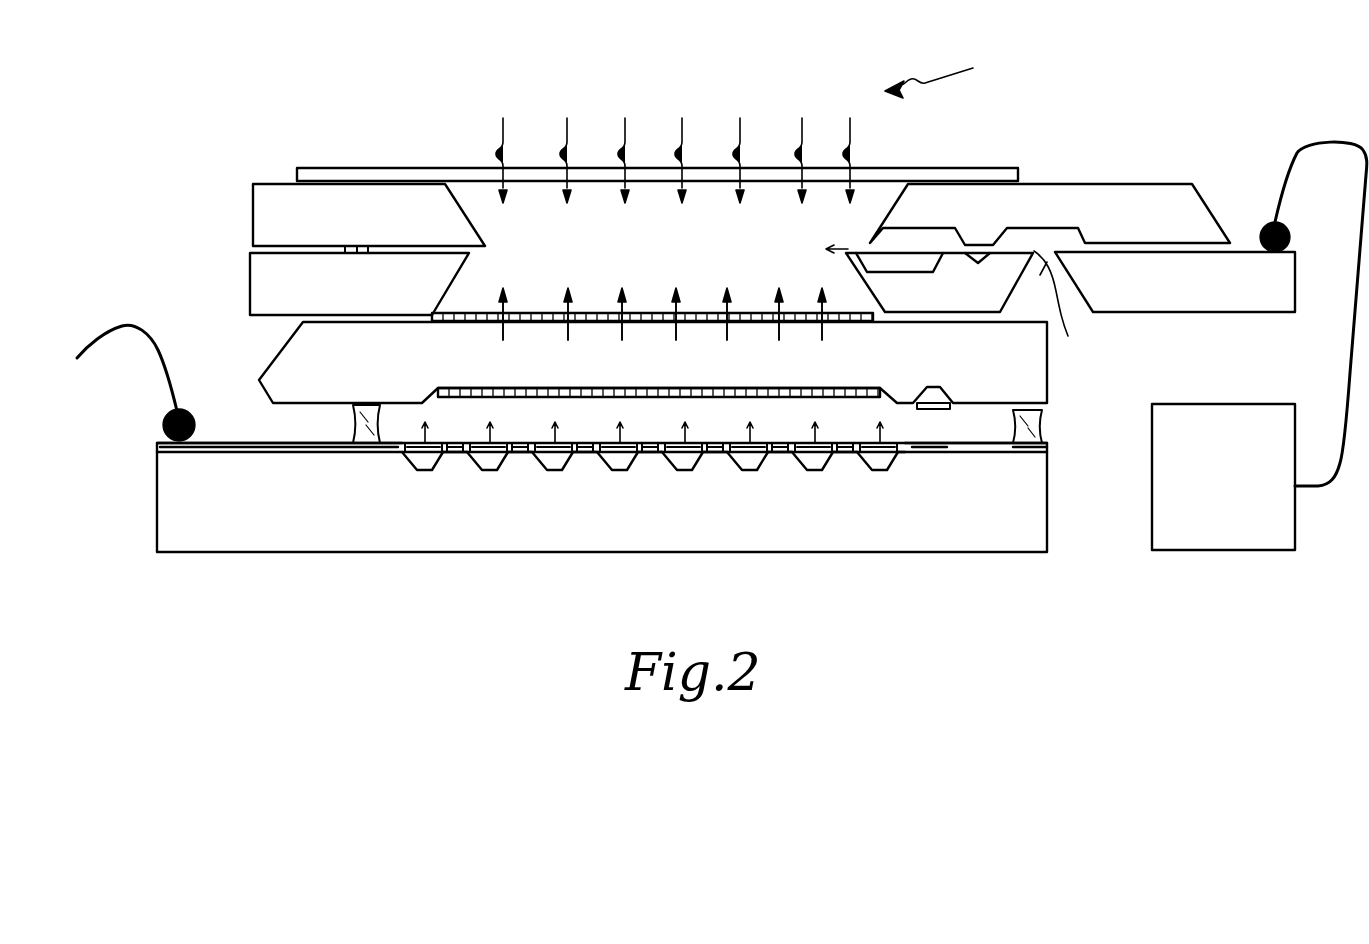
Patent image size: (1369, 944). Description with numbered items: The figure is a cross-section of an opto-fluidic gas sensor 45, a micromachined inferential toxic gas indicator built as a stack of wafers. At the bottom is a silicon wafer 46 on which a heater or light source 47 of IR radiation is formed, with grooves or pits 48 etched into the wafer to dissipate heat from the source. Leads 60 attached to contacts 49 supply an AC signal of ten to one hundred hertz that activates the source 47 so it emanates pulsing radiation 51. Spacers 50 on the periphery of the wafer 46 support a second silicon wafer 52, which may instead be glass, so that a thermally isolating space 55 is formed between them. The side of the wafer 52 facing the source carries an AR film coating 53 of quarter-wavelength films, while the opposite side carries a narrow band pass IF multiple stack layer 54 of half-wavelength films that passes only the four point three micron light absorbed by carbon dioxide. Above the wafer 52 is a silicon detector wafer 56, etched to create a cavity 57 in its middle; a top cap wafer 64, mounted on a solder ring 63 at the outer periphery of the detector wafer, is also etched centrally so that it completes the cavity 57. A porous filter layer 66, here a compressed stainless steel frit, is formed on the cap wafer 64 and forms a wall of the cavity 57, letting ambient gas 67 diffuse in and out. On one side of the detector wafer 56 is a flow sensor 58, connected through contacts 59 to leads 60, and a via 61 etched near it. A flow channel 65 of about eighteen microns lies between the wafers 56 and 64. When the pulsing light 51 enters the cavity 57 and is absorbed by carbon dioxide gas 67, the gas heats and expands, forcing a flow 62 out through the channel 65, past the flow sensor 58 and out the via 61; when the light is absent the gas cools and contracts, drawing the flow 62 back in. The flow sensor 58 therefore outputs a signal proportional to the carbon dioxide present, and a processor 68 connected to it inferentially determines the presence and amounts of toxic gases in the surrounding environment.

The opto-fluidic gas sensor 45 is at (946, 75).
The silicon wafer 46 is at (1047, 502).
The light source 47 is at (495, 442).
The grooves or pits 48 is at (402, 446).
The contacts 49 is at (163, 438).
The spacers 50 is at (353, 425).
The radiation 51 is at (568, 303).
The silicon wafer 52 is at (343, 376).
The AR film coating 53 is at (778, 398).
The narrow band pass IF multiple stack layer 54 is at (700, 313).
The thermally isolating space 55 is at (728, 430).
The silicon detector wafer 56 is at (441, 292).
The cavity 57 is at (633, 243).
The flow sensor 58 is at (980, 256).
The contacts 59 is at (1292, 244).
The leads 60 is at (1288, 168).
The via 61 is at (1043, 283).
The flow 62 is at (966, 250).
The solder ring 63 is at (358, 246).
The top cap wafer 64 is at (485, 240).
The flow channel 65 is at (841, 266).
The porous filter layer 66 is at (910, 168).
The ambient gas 67 is at (627, 125).
The processor 68 is at (1235, 440).